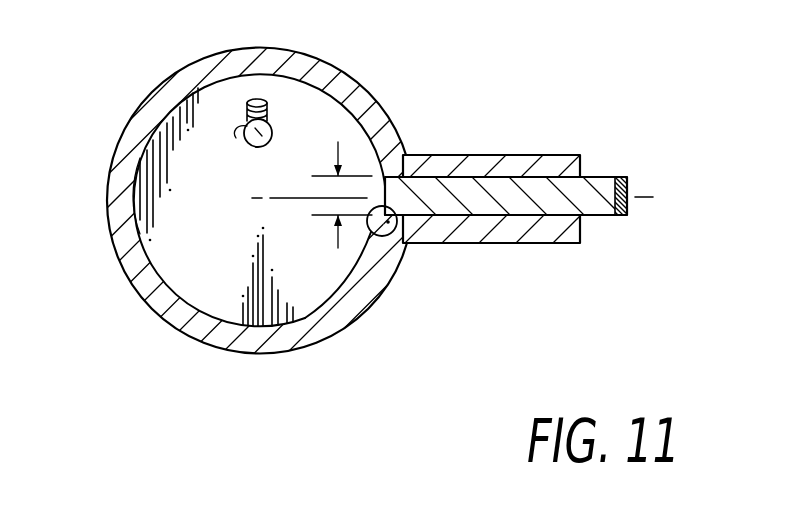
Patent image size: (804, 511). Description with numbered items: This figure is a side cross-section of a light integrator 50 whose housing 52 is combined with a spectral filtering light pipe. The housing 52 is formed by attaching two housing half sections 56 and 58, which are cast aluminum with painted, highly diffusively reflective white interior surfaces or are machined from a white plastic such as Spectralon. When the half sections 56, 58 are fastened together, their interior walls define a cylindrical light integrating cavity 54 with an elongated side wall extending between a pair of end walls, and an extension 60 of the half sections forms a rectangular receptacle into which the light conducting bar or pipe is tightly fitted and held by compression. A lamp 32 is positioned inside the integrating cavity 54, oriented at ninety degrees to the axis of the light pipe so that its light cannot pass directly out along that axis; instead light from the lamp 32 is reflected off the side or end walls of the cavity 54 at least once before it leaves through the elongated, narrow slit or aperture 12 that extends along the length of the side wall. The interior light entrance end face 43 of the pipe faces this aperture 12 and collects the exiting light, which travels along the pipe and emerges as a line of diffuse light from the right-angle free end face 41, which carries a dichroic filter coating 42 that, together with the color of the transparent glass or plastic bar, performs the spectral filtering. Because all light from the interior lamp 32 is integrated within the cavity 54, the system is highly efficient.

The slit or aperture 12 is at (342, 179).
The lamp 32 is at (242, 137).
The free end face 41 is at (628, 183).
The dichroic filter coating 42 is at (621, 220).
The light entrance end face 43 is at (402, 248).
The light integrator 50 is at (96, 253).
The housing 52 is at (362, 84).
The integrating cavity 54 is at (197, 93).
The housing half section 56 is at (140, 135).
The housing half section 58 is at (196, 326).
The extension 60 is at (503, 153).